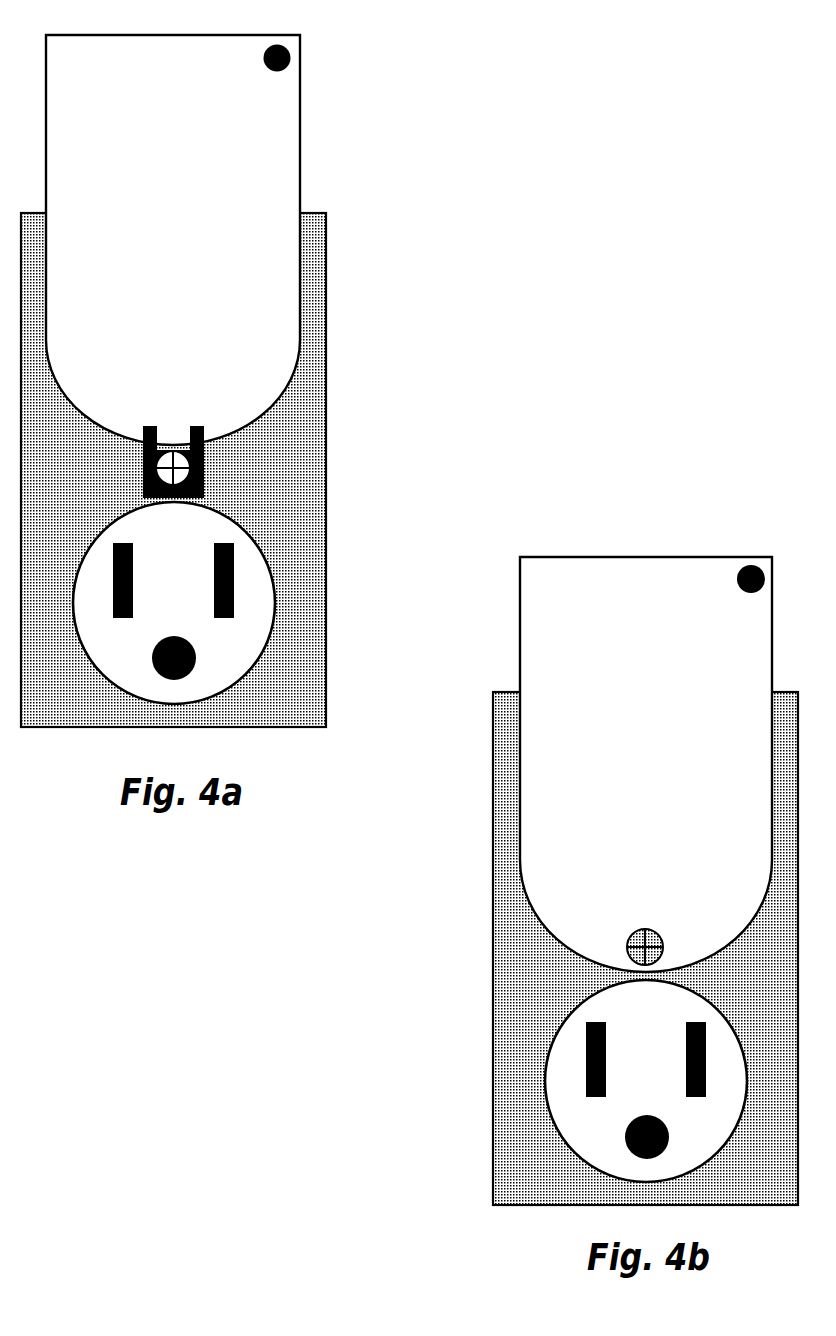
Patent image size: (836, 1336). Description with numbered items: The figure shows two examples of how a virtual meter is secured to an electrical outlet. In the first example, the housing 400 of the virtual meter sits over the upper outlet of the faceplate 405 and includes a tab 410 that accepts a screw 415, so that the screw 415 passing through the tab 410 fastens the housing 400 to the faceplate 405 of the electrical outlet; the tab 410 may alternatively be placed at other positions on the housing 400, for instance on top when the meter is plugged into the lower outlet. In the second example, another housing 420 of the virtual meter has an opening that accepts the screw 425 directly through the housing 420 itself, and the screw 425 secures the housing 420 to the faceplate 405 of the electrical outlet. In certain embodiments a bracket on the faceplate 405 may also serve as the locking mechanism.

In FIG. 4A, the housing 400 is at (260, 240).
In FIG. 4A, the faceplate 405 is at (243, 470).
In FIG. 4B, the faceplate 405 is at (584, 948).
In FIG. 4A, the tab 410 is at (286, 482).
In FIG. 4A, the screw 415 is at (295, 449).
In FIG. 4B, the housing 420 is at (646, 722).
In FIG. 4B, the screw 425 is at (519, 971).